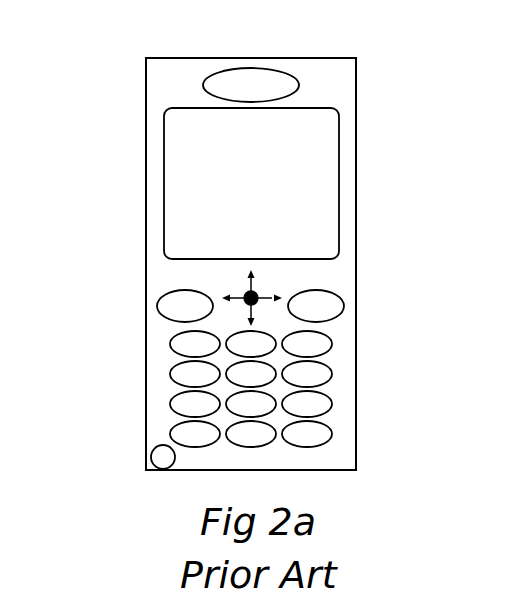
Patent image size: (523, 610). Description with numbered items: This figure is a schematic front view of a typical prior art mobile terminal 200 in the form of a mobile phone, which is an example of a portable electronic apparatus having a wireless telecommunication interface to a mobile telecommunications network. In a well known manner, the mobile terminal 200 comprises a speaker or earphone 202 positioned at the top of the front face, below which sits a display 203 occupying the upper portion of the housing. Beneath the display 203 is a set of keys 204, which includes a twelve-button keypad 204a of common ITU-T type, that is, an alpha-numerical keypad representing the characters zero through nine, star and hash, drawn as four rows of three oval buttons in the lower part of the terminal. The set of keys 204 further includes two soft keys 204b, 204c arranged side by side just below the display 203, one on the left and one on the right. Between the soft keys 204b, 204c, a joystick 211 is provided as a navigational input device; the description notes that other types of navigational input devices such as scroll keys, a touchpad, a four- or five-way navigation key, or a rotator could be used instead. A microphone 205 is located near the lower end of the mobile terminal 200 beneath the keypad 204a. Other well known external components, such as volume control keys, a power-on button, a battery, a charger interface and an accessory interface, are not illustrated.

The mobile terminal 200 is at (113, 63).
The speaker or earphone 202 is at (243, 79).
The display 203 is at (175, 172).
The set of keys 204 is at (254, 389).
The 12-button keypad 204a is at (320, 372).
The soft key 204b is at (173, 306).
The soft key 204c is at (324, 310).
The microphone 205 is at (159, 454).
The joystick 211 is at (241, 295).